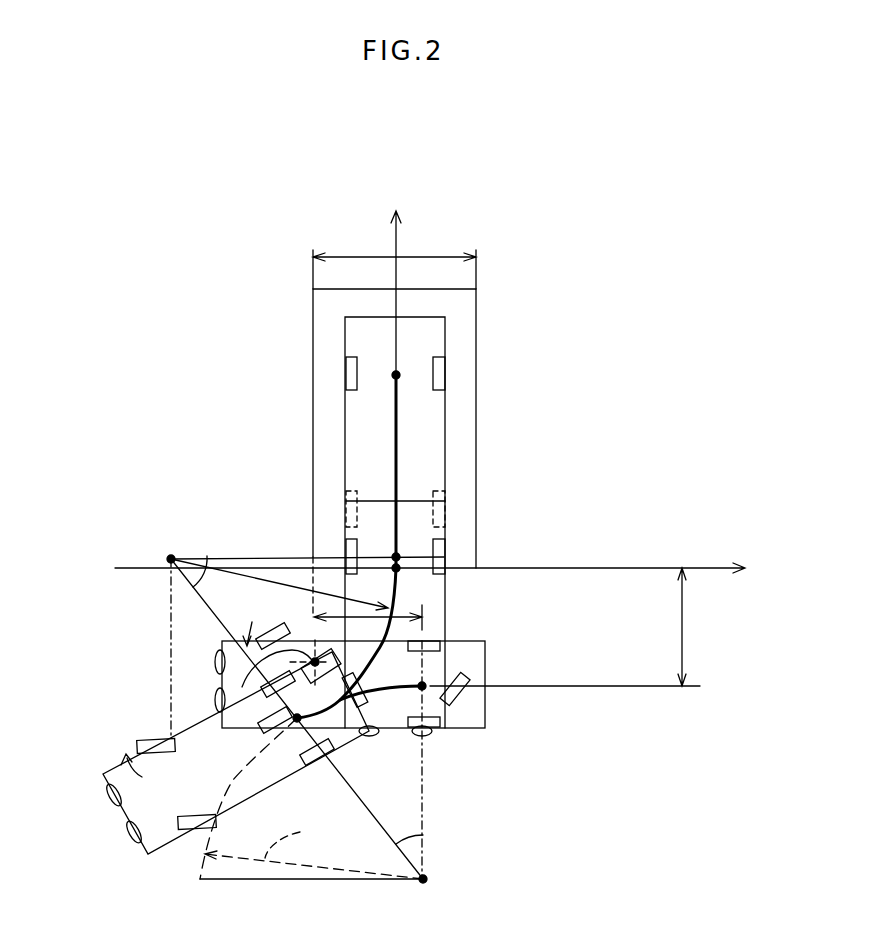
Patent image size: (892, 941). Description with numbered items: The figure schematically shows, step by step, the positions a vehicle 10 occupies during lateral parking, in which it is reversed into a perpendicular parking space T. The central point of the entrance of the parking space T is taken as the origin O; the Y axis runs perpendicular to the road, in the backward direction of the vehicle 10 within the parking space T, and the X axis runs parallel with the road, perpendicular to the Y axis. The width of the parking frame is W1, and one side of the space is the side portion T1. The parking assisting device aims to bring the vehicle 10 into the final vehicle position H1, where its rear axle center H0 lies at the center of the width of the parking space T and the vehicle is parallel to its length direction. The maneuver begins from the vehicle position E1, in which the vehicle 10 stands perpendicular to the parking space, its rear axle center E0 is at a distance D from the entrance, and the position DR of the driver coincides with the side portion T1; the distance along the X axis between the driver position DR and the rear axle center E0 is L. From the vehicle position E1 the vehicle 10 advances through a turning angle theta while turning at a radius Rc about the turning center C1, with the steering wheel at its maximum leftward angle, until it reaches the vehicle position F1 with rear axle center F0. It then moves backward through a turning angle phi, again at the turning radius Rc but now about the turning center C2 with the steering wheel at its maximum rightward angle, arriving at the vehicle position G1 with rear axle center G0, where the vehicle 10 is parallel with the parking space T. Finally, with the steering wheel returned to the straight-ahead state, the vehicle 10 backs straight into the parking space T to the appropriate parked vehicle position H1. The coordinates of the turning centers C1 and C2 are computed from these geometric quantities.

The Y axis Y is at (382, 386).
The X axis X is at (434, 585).
The width of the parking frame W1 is at (433, 257).
The side portion of the parking space T1 is at (315, 418).
The vehicle 10 is at (445, 427).
The parking space T is at (476, 478).
The vehicle position H1 is at (445, 402).
The rear axle center H0 is at (396, 375).
The rear axle center G0 is at (396, 557).
The origin O is at (396, 568).
The vehicle position G1 is at (350, 581).
The distance in the X axis direction L is at (395, 615).
The distance D is at (683, 630).
The turning center C2 is at (171, 558).
The turning angle phi is at (200, 578).
The turning radius Rc is at (279, 584).
The position of the driver DR is at (218, 685).
The vehicle position E1 is at (470, 728).
The rear axle center E0 is at (422, 688).
The vehicle position F1 is at (103, 774).
The rear axle center F0 is at (297, 722).
The turning center C1 is at (423, 879).
The turning angle theta is at (400, 835).